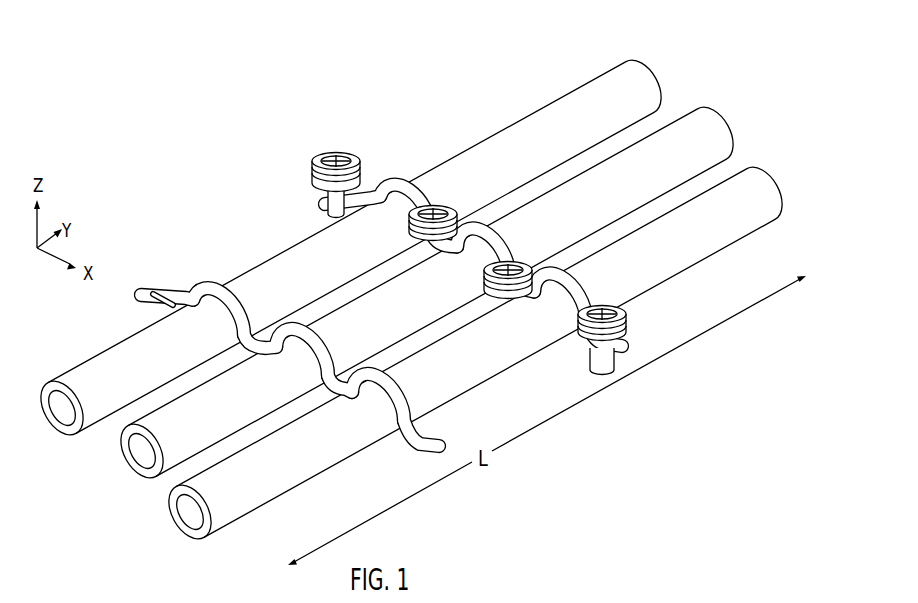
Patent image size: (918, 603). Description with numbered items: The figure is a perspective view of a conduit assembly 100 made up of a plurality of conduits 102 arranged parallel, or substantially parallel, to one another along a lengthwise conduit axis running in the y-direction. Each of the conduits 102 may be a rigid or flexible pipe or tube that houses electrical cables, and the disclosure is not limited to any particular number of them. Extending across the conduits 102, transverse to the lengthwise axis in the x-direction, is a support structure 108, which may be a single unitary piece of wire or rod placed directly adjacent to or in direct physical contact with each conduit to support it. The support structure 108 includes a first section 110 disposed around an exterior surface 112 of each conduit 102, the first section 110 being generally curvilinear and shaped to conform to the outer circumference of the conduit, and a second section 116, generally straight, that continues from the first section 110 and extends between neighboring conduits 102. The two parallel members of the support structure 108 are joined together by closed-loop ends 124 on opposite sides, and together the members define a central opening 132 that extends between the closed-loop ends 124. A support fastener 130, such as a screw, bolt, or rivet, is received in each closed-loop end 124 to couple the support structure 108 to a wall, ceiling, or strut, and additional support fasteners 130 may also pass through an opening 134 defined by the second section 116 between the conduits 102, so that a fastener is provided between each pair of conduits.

The conduit assembly 100 is at (423, 299).
The conduits 102 is at (423, 309).
The support structure 108 is at (350, 321).
The first section 110 is at (385, 316).
The exterior surface 112 is at (407, 317).
The second section 116 is at (267, 294).
The closed-loop ends 124 is at (240, 231).
The support fastener 130 is at (474, 242).
The central opening 132 is at (513, 383).
The opening 134 is at (408, 409).